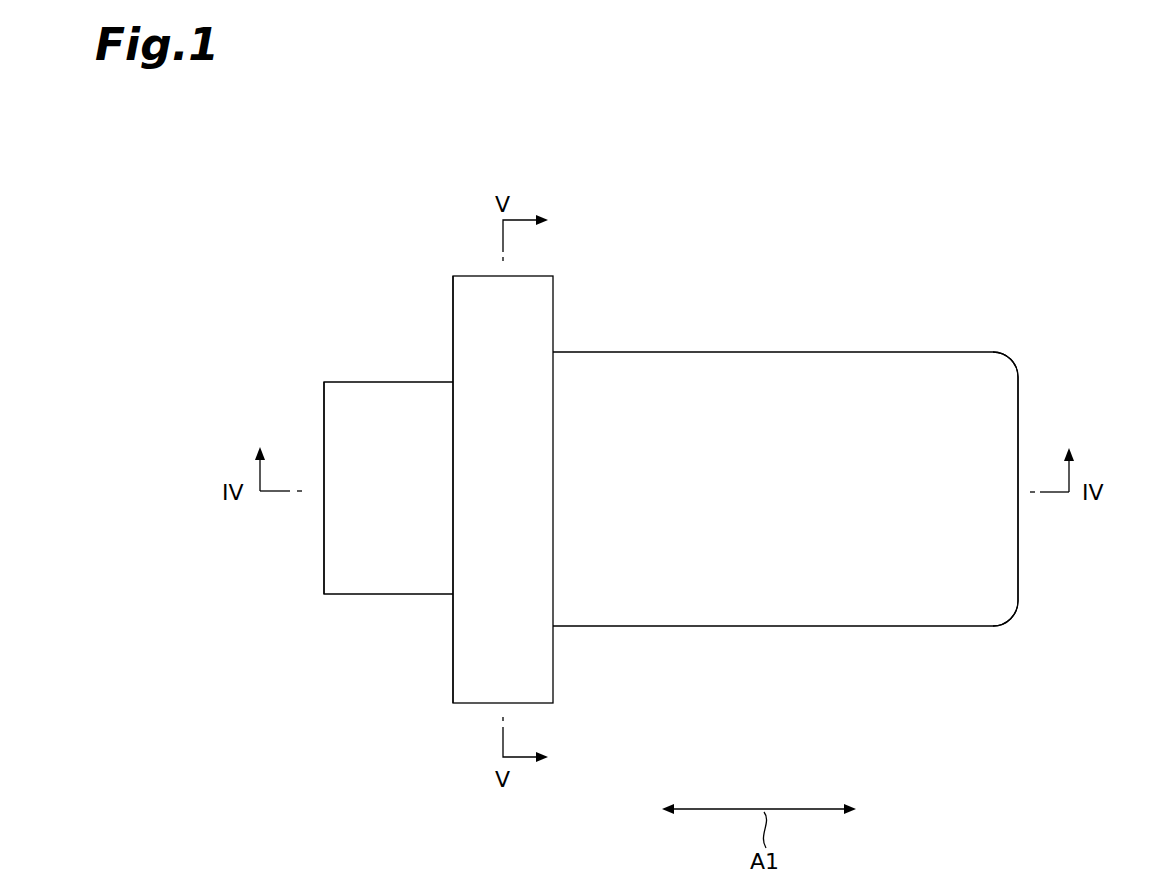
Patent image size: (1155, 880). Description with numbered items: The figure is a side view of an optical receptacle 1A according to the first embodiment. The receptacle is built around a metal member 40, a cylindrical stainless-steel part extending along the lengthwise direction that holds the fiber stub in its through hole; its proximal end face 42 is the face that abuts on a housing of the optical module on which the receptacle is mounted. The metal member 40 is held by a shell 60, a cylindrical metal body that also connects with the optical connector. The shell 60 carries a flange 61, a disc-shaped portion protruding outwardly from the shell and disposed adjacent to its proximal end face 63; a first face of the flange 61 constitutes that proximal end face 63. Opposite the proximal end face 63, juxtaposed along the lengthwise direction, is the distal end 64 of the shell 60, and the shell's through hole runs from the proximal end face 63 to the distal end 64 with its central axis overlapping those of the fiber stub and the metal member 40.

The optical receptacle 1A is at (903, 166).
The metal member 40 is at (378, 608).
The proximal end face 42 is at (324, 575).
The shell 60 is at (872, 340).
The flange 61 is at (540, 311).
The proximal end face 63 is at (453, 316).
The distal end 64 is at (1018, 403).